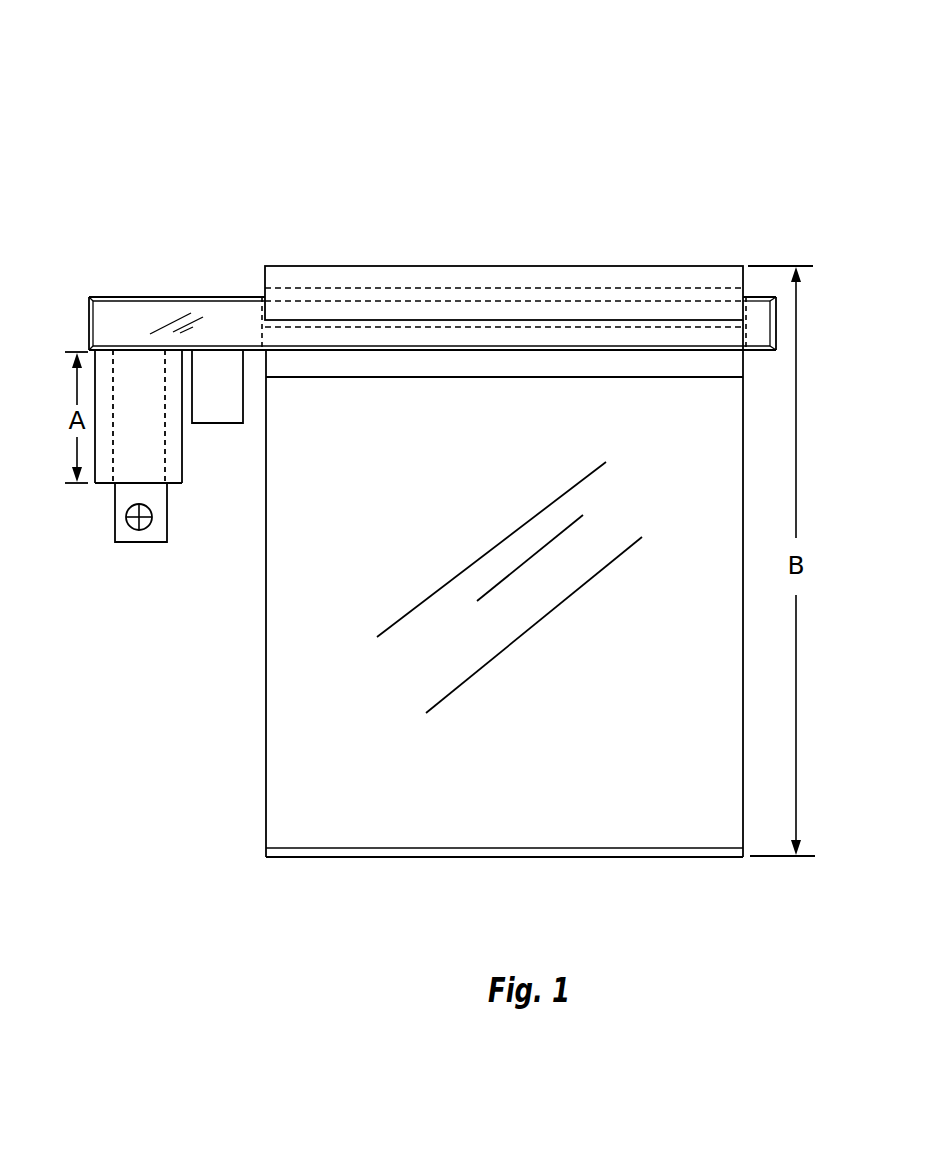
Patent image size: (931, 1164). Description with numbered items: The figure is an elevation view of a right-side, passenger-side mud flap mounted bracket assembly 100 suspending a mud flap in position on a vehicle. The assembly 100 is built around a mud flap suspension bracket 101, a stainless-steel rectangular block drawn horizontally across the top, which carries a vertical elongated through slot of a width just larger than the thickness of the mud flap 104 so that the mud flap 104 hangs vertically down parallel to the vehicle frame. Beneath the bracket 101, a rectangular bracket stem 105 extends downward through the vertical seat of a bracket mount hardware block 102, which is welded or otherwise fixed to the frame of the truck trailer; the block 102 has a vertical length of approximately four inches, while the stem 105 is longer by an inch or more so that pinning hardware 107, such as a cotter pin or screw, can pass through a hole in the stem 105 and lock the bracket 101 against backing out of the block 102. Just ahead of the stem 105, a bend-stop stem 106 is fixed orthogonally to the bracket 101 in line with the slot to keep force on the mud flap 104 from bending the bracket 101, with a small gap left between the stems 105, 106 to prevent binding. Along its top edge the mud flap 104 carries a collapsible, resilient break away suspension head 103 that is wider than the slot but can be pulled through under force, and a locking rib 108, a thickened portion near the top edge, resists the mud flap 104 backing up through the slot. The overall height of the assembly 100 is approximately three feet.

The mud flap mounted bracket assembly 100 is at (523, 118).
The mud flap suspension bracket 101 is at (215, 297).
The bracket mount hardware block 102 is at (182, 445).
The break away suspension head 103 is at (627, 266).
The mud flap 104 is at (266, 717).
The bracket stem 105 is at (140, 542).
The bend-stop stem 106 is at (243, 388).
The pinning hardware 107 is at (126, 512).
The locking rib 108 is at (565, 377).